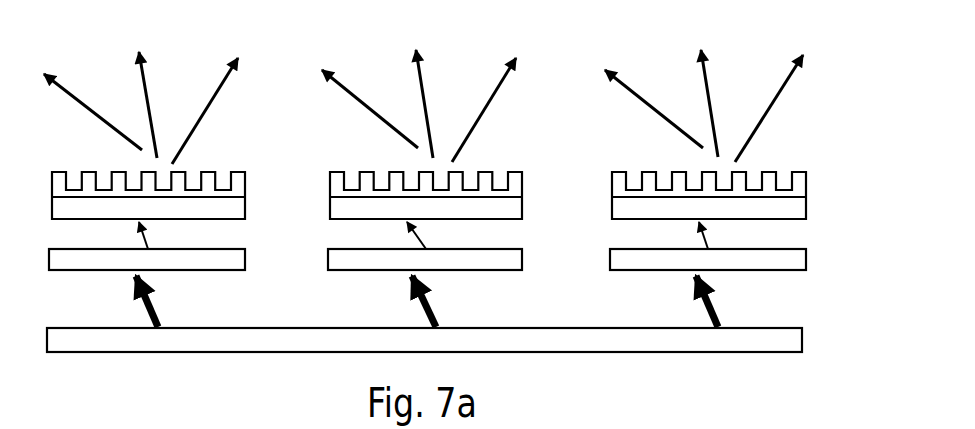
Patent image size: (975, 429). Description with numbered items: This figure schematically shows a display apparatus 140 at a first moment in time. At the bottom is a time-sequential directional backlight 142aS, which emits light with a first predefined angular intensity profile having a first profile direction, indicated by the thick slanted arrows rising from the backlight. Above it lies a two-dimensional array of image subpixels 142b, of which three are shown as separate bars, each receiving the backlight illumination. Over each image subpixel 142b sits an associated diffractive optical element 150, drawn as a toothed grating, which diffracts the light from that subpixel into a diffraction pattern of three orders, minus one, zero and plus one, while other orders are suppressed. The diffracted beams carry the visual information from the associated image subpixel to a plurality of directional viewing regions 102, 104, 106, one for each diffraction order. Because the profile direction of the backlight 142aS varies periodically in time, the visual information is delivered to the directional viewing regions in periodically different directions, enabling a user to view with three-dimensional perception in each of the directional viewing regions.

The directional viewing region 102 is at (583, 64).
The directional viewing region 104 is at (688, 56).
The directional viewing region 106 is at (814, 63).
The diffractive optical element 150 is at (823, 190).
The image subpixel 142b is at (823, 258).
The time-sequential directional backlight 142aS is at (823, 338).
The display apparatus 140 is at (114, 365).